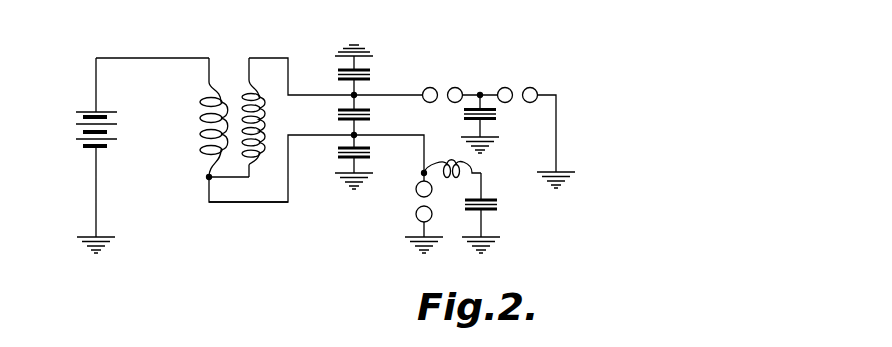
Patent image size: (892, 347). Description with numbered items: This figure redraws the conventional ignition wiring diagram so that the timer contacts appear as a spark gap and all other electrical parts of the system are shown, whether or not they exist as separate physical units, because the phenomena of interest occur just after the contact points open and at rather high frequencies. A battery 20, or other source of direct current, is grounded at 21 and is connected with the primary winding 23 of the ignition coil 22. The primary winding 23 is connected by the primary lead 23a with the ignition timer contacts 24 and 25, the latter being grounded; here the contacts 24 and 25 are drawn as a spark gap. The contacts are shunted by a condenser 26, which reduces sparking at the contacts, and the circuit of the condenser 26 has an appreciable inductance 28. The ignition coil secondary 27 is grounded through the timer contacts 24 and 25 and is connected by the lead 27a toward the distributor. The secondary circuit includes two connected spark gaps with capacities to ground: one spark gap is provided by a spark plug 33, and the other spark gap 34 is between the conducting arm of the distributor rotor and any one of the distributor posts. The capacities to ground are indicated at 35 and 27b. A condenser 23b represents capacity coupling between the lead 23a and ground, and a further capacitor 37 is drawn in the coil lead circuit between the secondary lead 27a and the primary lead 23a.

The battery 20 is at (78, 124).
The ground 21 is at (90, 247).
The ignition coil 22 is at (237, 46).
The primary winding 23 is at (200, 120).
The primary lead 23a is at (250, 203).
The condenser 23b is at (371, 153).
The ignition timer contact 24 is at (417, 189).
The ignition timer contact 25 is at (417, 216).
The condenser 26 is at (498, 203).
The secondary winding 27 is at (261, 120).
The lead 27a is at (377, 76).
The capacity to ground 27b is at (338, 77).
The inductance 28 is at (450, 162).
The spark plug 33 is at (517, 87).
The spark gap 34 is at (446, 87).
The capacity to ground 35 is at (497, 115).
The capacitor 37 is at (371, 115).